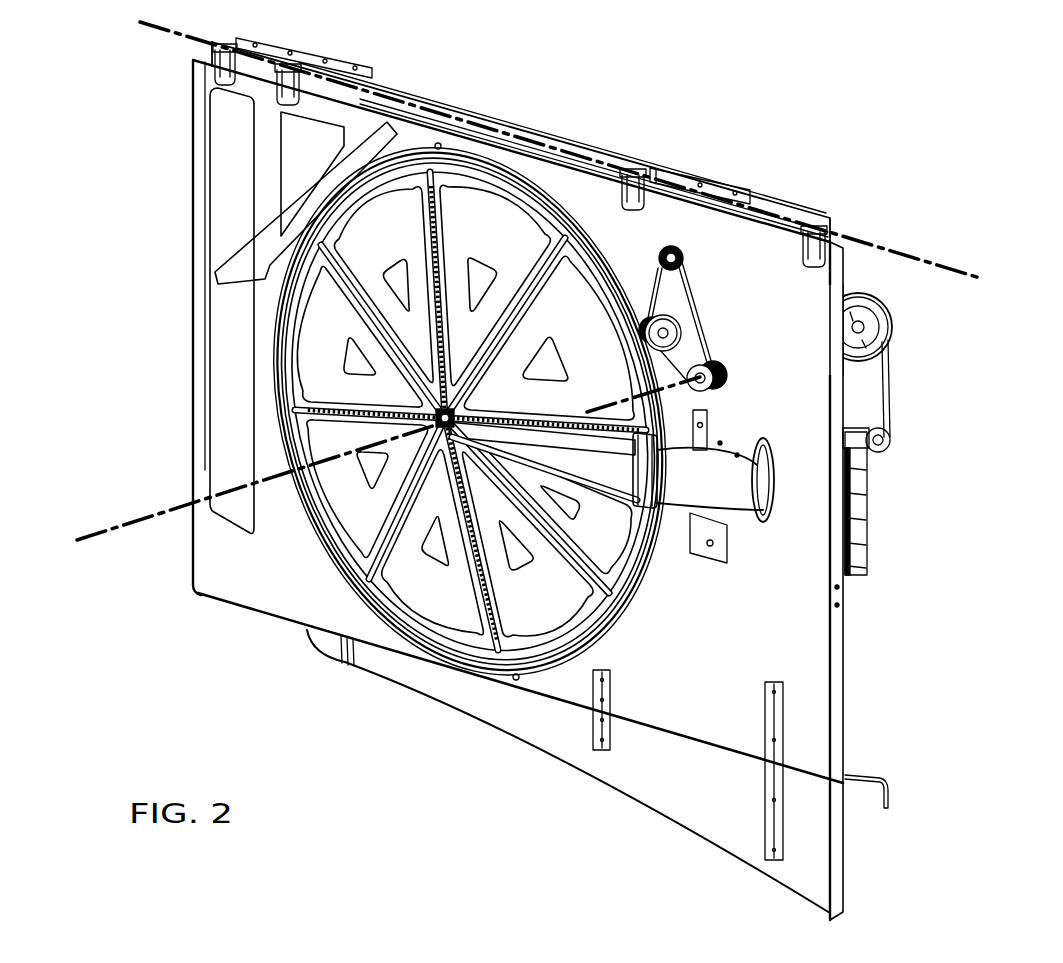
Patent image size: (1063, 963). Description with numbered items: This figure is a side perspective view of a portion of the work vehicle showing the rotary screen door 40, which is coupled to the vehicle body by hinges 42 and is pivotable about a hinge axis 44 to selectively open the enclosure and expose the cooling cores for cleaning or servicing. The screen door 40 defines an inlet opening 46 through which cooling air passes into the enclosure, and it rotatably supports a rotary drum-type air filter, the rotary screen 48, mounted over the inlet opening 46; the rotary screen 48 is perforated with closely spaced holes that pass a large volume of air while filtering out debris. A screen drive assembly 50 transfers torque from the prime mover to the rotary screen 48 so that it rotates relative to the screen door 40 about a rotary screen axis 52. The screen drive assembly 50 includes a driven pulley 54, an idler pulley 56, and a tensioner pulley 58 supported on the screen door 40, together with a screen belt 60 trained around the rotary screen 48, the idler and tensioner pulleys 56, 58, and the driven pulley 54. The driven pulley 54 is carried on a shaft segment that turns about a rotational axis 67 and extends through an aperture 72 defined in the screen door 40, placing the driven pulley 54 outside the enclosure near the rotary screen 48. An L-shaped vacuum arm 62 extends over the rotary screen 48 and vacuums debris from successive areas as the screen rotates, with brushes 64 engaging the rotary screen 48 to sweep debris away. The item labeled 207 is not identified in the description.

The rotary screen door 40 is at (650, 657).
The hinges 42 is at (268, 43).
The hinge axis 44 is at (933, 266).
The inlet opening 46 is at (358, 613).
The rotary screen 48 is at (418, 617).
The screen drive assembly 50 is at (915, 547).
The rotary screen axis 52 is at (133, 520).
The driven pulley 54 is at (722, 393).
The idler pulley 56 is at (690, 247).
The tensioner pulley 58 is at (667, 302).
The screen belt 60 is at (593, 222).
The vacuum arm 62 is at (585, 453).
The brushes 64 is at (505, 415).
The rotational axis 67 is at (610, 383).
The aperture 72 is at (736, 392).
The hook 207 is at (930, 760).